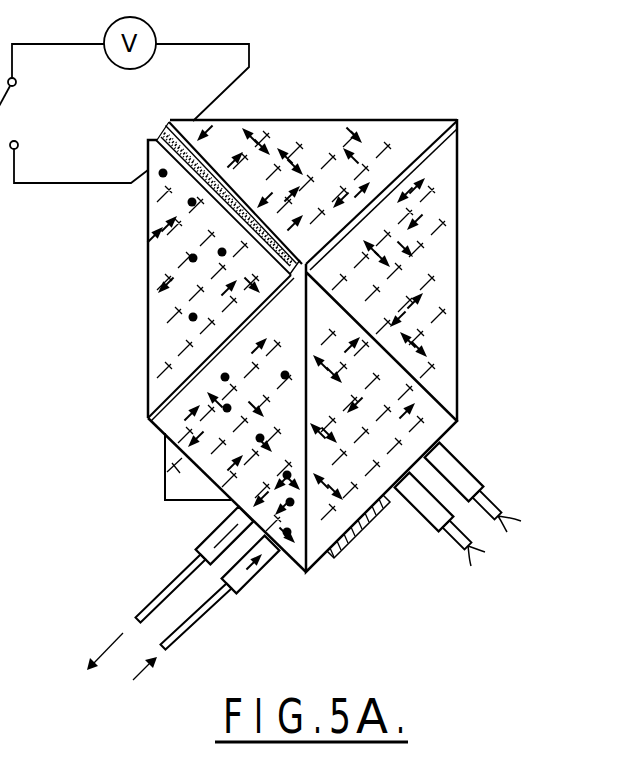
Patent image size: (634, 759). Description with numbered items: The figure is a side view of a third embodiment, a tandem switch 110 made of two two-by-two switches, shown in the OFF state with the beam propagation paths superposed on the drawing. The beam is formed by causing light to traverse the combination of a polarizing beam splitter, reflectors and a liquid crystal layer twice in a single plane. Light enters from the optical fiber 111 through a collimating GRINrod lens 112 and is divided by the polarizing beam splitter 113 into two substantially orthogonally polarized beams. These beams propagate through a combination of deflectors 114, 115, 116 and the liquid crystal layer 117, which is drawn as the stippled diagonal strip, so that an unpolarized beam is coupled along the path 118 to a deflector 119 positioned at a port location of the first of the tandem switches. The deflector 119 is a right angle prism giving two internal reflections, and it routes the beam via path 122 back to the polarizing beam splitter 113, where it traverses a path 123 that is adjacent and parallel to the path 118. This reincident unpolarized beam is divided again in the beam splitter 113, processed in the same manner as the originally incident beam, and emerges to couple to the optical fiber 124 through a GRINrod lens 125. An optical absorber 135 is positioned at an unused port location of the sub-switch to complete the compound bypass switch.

The tandem switch 110 is at (339, 100).
The optical fiber 111 is at (200, 613).
The collimating GRINrod lens 112 is at (260, 567).
The polarizing beam splitter 113 is at (437, 425).
The deflector 114 is at (457, 328).
The deflector 115 is at (415, 130).
The deflector 116 is at (148, 272).
The liquid crystal layer 117 is at (163, 131).
The path 118 is at (150, 418).
The deflector 119 is at (167, 470).
The path 122 is at (183, 487).
The path 123 is at (227, 500).
The optical fiber 124 is at (170, 590).
The GRINrod lens 125 is at (207, 535).
The optical absorber 135 is at (358, 533).